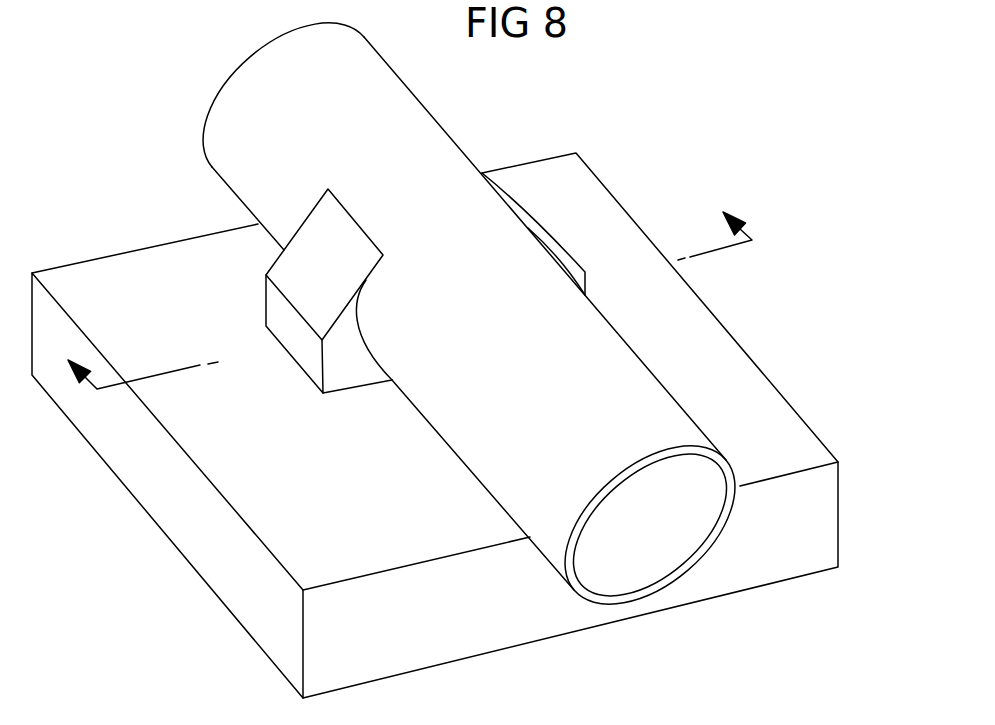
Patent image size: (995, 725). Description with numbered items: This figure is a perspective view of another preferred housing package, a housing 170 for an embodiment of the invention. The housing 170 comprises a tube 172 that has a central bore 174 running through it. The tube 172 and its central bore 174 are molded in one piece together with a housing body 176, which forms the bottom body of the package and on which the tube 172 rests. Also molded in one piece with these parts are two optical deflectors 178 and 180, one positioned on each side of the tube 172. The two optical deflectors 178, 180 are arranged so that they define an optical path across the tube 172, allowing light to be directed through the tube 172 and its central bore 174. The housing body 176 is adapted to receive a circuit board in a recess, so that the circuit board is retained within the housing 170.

The housing 170 is at (586, 98).
The tube 172 is at (443, 128).
The central bore 174 is at (714, 488).
The housing body 176 is at (774, 384).
The optical deflector 178 is at (297, 272).
The optical deflector 180 is at (545, 228).